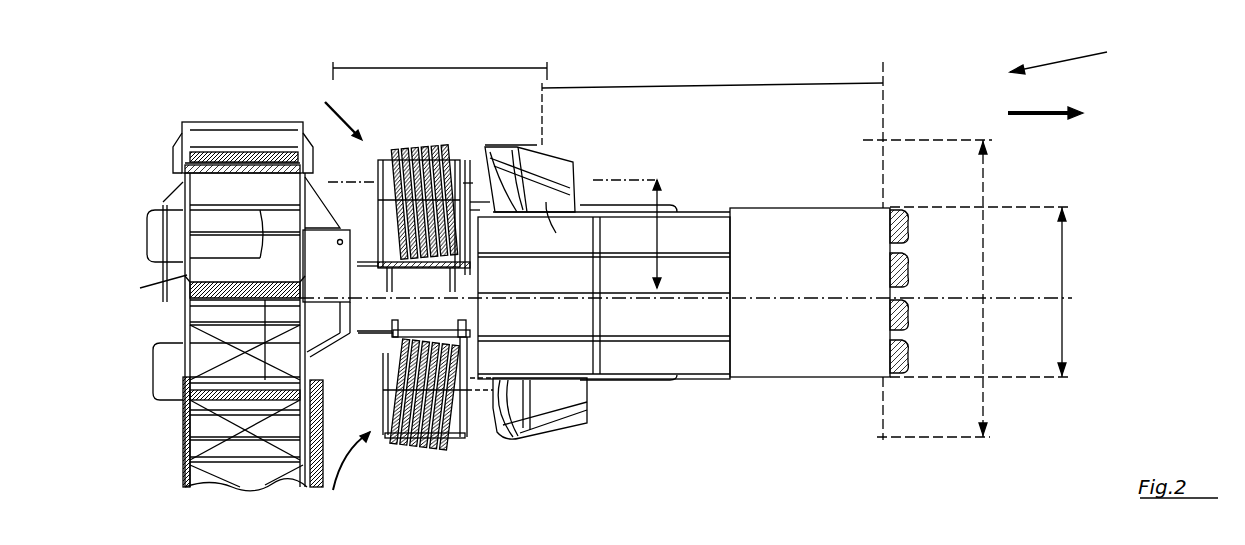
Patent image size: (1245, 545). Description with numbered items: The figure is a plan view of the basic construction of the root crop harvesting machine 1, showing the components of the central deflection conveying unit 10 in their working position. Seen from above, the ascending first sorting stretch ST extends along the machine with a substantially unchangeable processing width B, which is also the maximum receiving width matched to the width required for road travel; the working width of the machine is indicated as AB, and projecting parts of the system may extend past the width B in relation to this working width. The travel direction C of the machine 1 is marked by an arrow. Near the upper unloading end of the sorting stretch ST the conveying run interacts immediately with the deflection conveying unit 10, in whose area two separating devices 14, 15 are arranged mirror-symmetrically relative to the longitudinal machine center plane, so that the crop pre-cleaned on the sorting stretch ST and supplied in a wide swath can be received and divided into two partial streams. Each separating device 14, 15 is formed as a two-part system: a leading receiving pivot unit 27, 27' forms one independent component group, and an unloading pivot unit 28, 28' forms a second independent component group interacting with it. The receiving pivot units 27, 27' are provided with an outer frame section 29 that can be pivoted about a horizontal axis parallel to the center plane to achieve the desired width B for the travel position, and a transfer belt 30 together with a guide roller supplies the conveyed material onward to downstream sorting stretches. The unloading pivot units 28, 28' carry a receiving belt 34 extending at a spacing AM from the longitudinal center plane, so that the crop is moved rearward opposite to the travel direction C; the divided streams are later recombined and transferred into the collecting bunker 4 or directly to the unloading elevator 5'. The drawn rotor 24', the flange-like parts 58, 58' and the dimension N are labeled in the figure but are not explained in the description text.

The root crop harvesting machine 1 is at (1068, 58).
The collecting bunker 4 is at (185, 272).
The unloading elevator 5' is at (158, 432).
The deflection conveying unit 10 is at (717, 472).
The separating device 14 is at (325, 115).
The separating device 15 is at (346, 476).
The rotor 24' is at (545, 295).
The receiving pivot unit 27 is at (553, 429).
The receiving pivot unit 27' is at (560, 176).
The unloading pivot unit 28 is at (427, 401).
The unloading pivot unit 28' is at (423, 192).
The outer frame section 29 is at (477, 70).
The transfer belt 30 is at (548, 405).
The receiving belt 34 is at (478, 407).
The flange 58 is at (710, 168).
The flange 58' is at (827, 166).
The spacing AM is at (657, 235).
The working width AB is at (985, 292).
The processing width B is at (1063, 292).
The travel direction C is at (1045, 116).
The gearbox dimension N is at (937, 295).
The first sorting stretch ST is at (752, 87).